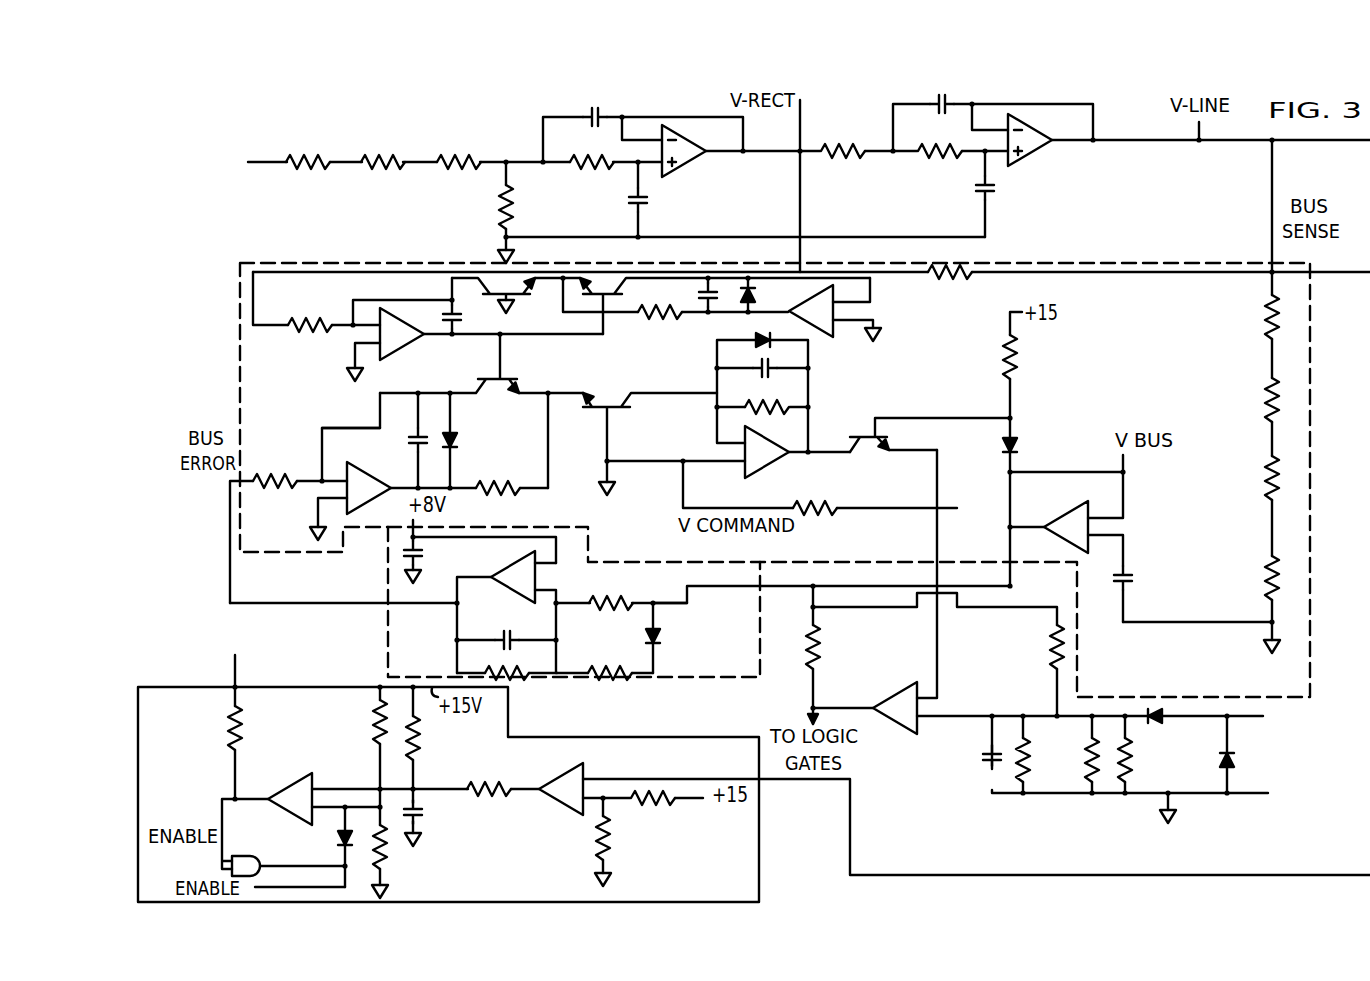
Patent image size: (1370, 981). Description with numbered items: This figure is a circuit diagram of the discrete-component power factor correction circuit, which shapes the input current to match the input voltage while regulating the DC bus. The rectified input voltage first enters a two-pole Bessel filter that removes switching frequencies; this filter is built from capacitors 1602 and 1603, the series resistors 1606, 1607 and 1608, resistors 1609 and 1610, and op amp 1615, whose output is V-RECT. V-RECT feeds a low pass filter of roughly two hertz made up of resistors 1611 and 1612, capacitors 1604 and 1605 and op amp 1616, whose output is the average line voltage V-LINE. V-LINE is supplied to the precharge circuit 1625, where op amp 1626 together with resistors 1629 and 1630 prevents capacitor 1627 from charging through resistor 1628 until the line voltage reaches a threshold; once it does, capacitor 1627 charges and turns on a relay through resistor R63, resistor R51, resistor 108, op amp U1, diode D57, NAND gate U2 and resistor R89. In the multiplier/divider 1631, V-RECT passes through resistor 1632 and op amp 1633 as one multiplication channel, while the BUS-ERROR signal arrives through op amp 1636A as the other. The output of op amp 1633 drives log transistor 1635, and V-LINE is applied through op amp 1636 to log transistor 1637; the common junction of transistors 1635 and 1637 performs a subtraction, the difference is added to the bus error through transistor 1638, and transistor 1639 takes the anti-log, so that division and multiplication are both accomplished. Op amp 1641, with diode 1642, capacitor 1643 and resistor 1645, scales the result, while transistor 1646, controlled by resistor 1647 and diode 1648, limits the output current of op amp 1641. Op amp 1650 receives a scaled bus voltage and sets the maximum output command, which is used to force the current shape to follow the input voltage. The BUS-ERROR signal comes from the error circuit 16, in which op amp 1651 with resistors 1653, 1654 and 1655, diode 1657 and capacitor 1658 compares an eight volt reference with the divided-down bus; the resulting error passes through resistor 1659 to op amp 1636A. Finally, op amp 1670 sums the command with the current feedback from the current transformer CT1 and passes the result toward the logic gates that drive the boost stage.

The capacitor 1602 is at (609, 112).
The capacitor 1603 is at (643, 203).
The capacitor 1604 is at (991, 194).
The capacitor 1605 is at (938, 99).
The resistor 1606 is at (311, 157).
The resistor 1607 is at (388, 157).
The resistor 1608 is at (465, 157).
The resistor 1609 is at (502, 211).
The resistor 1610 is at (588, 169).
The resistor 1611 is at (852, 132).
The resistor 1612 is at (925, 158).
The op amp 1615 is at (689, 142).
The op amp 1616 is at (1030, 158).
The precharge circuit 1625 is at (776, 861).
The op amp 1626 is at (560, 776).
The capacitor 1627 is at (422, 815).
The resistor 1628 is at (486, 784).
The resistor 1629 is at (661, 805).
The resistor 1630 is at (612, 832).
The multiplier/divider 1631 is at (299, 250).
The resistor 1632 is at (307, 317).
The op amp 1633 is at (405, 348).
The log transistor 1635 is at (522, 284).
The op amp 1636 is at (823, 333).
The op amp 1636A is at (380, 450).
The log transistor 1637 is at (612, 295).
The transistor 1638 is at (542, 382).
The transistor 1639 is at (622, 392).
The op amp 1641 is at (770, 468).
The diode 1642 is at (758, 334).
The capacitor 1643 is at (810, 369).
The resistor 1645 is at (786, 400).
The transistor 1646 is at (890, 441).
The resistor 1647 is at (1016, 364).
The diode 1648 is at (1017, 446).
The op amp 1650 is at (1055, 516).
The op amp 1651 is at (537, 587).
The resistor 1653 is at (610, 601).
The resistor 1654 is at (596, 667).
The resistor 1655 is at (530, 676).
The diode 1657 is at (663, 633).
The capacitor 1658 is at (499, 636).
The resistor 1659 is at (266, 475).
The op amp 1670 is at (891, 727).
The circuit block 16 is at (539, 602).
The resistor 108 is at (420, 744).
The resistor R89 is at (255, 728).
The resistor R51 is at (363, 745).
The resistor R63 is at (398, 852).
The op amp U1 is at (288, 784).
The NAND gate U2 is at (242, 856).
The diode D57 is at (337, 841).
The current transformer CT1 is at (1238, 758).